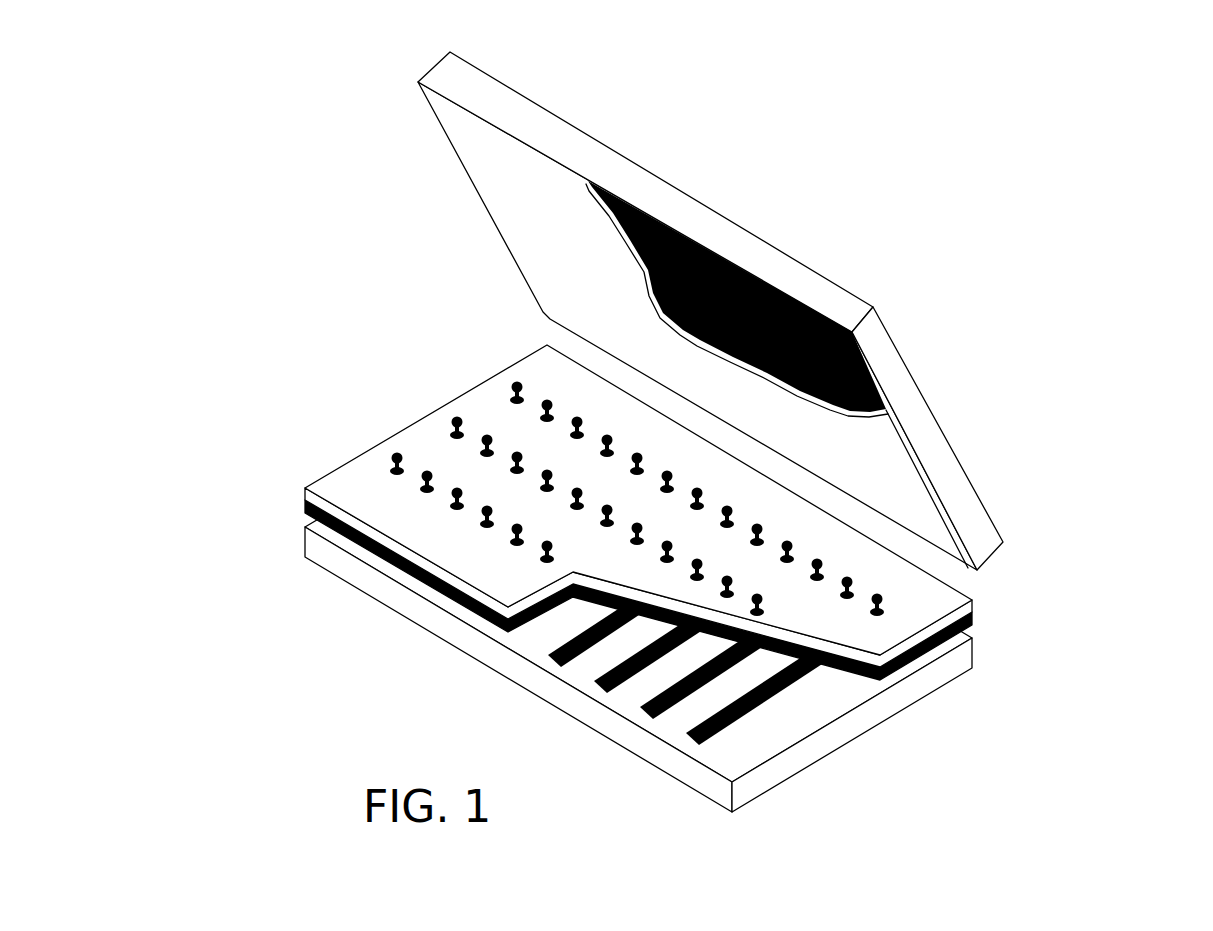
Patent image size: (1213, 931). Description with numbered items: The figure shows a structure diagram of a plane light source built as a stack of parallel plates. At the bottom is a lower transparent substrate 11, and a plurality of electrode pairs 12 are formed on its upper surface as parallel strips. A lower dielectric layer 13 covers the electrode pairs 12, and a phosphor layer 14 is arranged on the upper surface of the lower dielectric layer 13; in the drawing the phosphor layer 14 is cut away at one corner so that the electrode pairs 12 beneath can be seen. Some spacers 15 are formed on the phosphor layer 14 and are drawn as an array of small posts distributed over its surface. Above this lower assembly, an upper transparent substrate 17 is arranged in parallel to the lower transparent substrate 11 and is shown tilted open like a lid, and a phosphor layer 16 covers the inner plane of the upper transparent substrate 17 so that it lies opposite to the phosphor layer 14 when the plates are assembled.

The lower transparent substrate 11 is at (960, 663).
The electrode pairs 12 is at (553, 655).
The lower dielectric layer 13 is at (972, 623).
The phosphor layer 14 is at (937, 590).
The spacers 15 is at (392, 465).
The phosphor layer 16 is at (503, 215).
The upper transparent substrate 17 is at (913, 403).